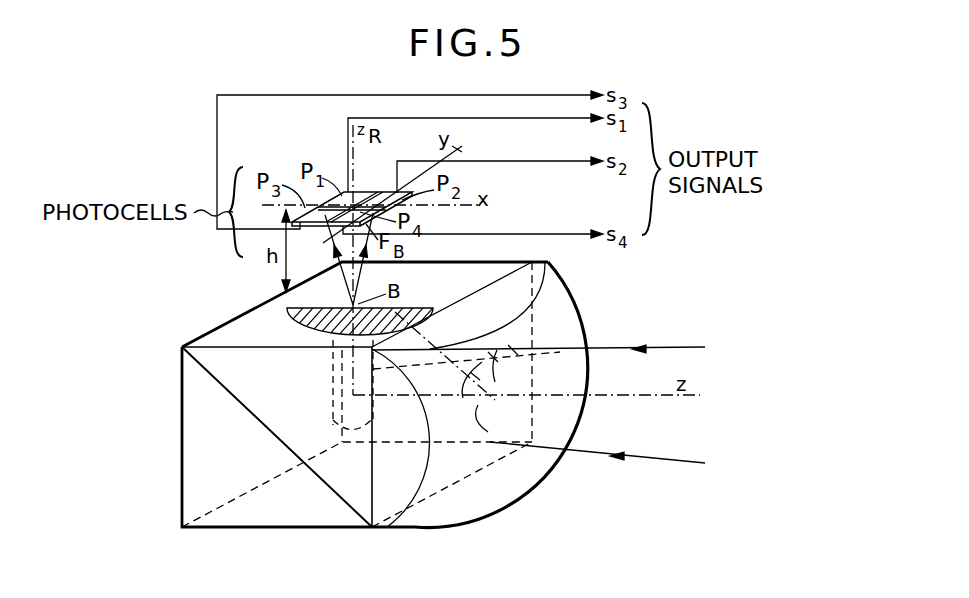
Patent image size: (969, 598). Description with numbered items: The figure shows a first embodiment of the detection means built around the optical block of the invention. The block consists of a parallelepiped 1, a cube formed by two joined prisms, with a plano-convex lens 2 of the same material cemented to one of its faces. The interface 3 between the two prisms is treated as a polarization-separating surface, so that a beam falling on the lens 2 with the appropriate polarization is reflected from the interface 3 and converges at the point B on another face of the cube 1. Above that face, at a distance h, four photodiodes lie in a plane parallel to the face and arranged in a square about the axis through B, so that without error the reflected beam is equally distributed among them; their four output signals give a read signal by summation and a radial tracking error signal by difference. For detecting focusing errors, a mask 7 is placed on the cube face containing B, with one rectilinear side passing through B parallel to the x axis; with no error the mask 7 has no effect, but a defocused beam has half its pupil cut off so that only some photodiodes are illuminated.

The parallelepiped 1 is at (238, 518).
The plano-convex lens 2 is at (518, 486).
The interface 3 is at (345, 505).
The mask 7 is at (302, 315).